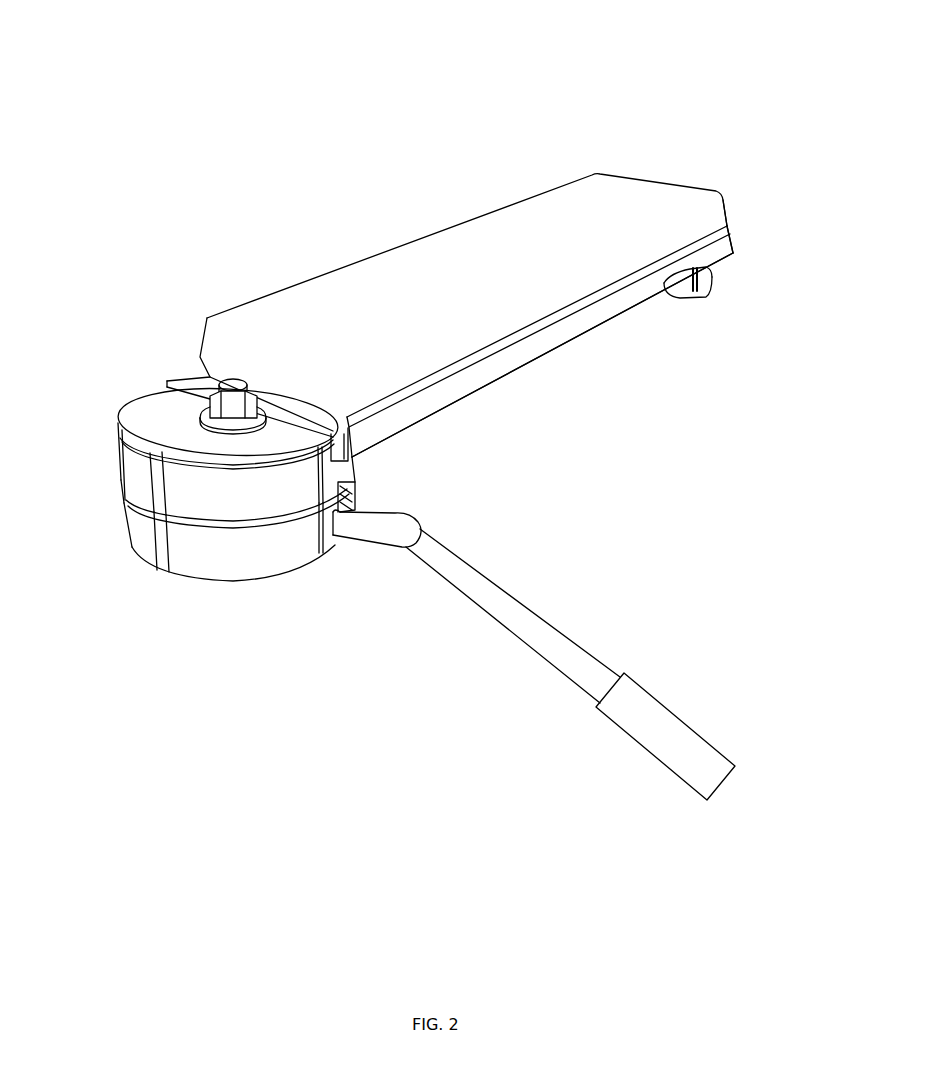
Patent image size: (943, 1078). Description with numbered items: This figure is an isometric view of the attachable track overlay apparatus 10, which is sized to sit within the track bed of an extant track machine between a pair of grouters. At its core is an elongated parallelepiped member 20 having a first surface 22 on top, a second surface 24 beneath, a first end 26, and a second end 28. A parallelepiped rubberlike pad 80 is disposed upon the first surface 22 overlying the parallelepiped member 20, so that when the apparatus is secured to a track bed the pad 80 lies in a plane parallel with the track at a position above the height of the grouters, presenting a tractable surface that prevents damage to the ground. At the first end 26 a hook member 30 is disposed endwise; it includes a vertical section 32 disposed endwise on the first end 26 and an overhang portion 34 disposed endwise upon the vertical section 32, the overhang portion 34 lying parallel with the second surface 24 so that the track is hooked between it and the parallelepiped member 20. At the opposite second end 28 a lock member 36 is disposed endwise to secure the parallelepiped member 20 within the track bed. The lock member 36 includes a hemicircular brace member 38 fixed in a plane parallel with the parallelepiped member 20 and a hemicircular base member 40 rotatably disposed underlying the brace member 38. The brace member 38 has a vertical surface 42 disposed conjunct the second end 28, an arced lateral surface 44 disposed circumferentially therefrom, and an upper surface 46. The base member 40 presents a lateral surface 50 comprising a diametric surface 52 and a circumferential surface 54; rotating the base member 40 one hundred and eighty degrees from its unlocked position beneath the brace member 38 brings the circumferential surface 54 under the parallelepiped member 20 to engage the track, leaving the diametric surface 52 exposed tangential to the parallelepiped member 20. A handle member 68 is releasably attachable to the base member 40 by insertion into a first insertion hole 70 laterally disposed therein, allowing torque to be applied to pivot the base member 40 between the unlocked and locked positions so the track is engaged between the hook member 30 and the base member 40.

The attachable track overlay apparatus 10 is at (748, 90).
The parallelepiped member 20 is at (538, 352).
The first surface 22 is at (733, 224).
The second surface 24 is at (451, 410).
The first end 26 is at (740, 236).
The second end 28 is at (150, 392).
The hook member 30 is at (748, 301).
The vertical section 32 is at (712, 278).
The overhang portion 34 is at (695, 301).
The lock member 36 is at (188, 553).
The hemicircular brace member 38 is at (128, 493).
The hemicircular base member 40 is at (128, 545).
The vertical surface 42 is at (356, 461).
The arced lateral surface 44 is at (200, 503).
The upper surface 46 is at (150, 387).
The lateral surface 50 is at (354, 595).
The diametric surface 52 is at (407, 513).
The circumferential surface 54 is at (288, 553).
The handle member 68 is at (545, 633).
The first insertion hole 70 is at (358, 503).
The rubberlike pad 80 is at (349, 273).